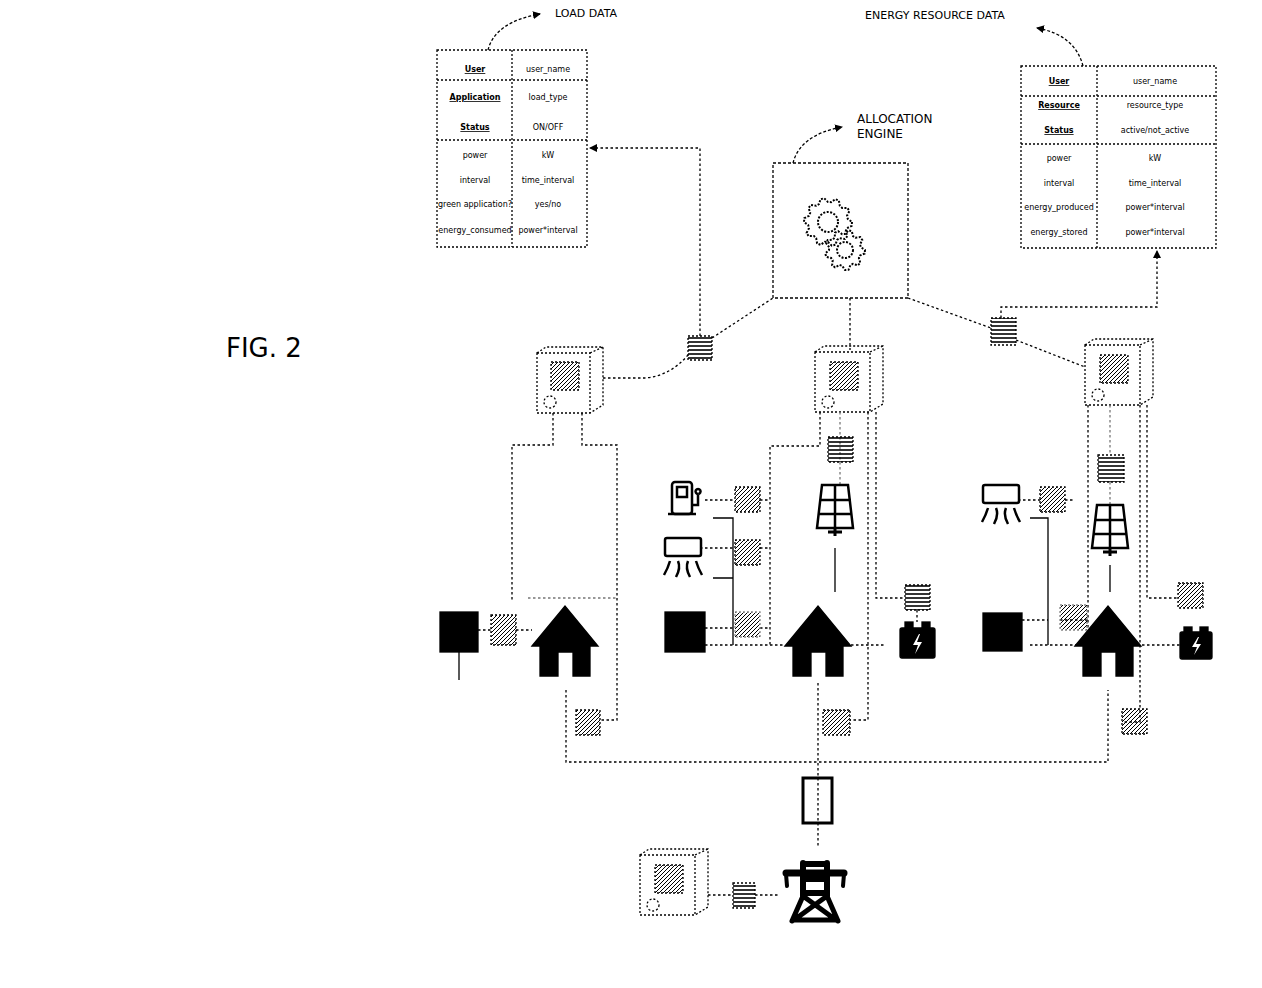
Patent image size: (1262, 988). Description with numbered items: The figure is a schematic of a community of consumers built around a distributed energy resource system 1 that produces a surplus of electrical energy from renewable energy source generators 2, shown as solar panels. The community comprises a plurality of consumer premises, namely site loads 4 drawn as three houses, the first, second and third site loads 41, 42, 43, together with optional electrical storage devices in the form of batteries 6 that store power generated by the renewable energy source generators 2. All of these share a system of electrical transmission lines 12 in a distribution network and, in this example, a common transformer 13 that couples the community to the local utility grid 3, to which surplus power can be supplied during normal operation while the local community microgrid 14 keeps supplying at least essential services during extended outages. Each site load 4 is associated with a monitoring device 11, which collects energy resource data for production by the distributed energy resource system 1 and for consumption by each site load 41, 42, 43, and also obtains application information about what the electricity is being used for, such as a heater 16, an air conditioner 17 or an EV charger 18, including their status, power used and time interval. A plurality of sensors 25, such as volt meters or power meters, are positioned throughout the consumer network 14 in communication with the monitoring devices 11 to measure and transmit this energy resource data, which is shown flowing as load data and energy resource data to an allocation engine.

The distributed energy resource (DER) system 1 is at (906, 550).
The renewable energy source generator 2 is at (853, 500).
The local utility grid 3 is at (860, 890).
The site load 4 is at (819, 675).
The first site load 41 is at (1085, 672).
The second site load 42 is at (790, 672).
The third site load 43 is at (545, 670).
The battery 6 is at (932, 660).
The monitoring device 11 is at (548, 358).
The electrical transmission lines 12 is at (993, 762).
The transformer 13 is at (803, 784).
The community microgrid 14 is at (989, 741).
The heater 16 is at (1005, 612).
The air conditioner 17 is at (668, 545).
The EV charger 18 is at (683, 478).
The sensor 25 is at (508, 605).